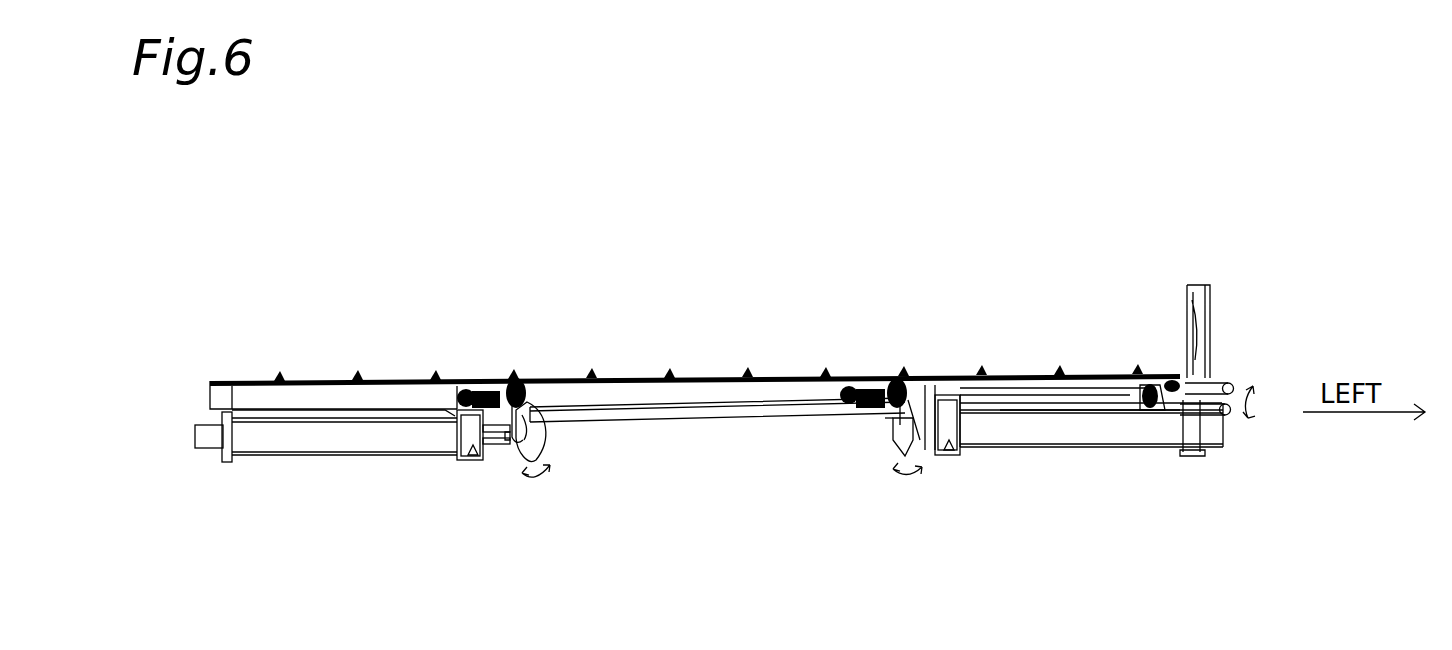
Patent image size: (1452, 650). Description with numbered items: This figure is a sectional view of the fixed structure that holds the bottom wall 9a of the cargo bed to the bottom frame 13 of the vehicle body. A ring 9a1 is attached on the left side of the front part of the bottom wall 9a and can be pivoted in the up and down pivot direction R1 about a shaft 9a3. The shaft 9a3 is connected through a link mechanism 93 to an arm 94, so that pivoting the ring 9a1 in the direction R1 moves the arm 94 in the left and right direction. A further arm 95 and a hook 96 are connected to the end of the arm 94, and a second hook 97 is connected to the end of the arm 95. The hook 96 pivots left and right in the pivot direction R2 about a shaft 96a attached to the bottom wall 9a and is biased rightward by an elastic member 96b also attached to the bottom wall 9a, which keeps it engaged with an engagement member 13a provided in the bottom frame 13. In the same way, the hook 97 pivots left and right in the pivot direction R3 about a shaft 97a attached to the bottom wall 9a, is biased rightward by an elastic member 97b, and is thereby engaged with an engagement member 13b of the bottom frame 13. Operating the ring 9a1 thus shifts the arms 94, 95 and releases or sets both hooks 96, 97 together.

The bottom wall 9a is at (220, 398).
The ring 9a1 is at (1222, 380).
The shaft 9a3 is at (1197, 333).
The bottom frame 13 is at (467, 462).
The engagement member 13a is at (890, 440).
The engagement member 13b is at (510, 443).
The link mechanism 93 is at (1163, 410).
The arm 94 is at (1073, 395).
The arm 95 is at (716, 410).
The hook 96 is at (925, 445).
The shaft 96a is at (905, 378).
The elastic member 96b is at (866, 378).
The hook 97 is at (548, 445).
The shaft 97a is at (523, 380).
The elastic member 97b is at (483, 380).
The pivot direction R1 is at (1268, 405).
The pivot direction R2 is at (910, 483).
The pivot direction R3 is at (542, 488).